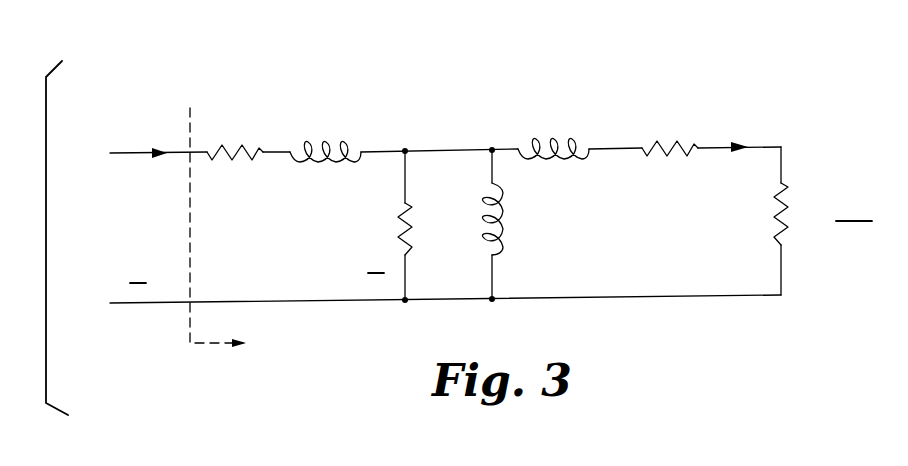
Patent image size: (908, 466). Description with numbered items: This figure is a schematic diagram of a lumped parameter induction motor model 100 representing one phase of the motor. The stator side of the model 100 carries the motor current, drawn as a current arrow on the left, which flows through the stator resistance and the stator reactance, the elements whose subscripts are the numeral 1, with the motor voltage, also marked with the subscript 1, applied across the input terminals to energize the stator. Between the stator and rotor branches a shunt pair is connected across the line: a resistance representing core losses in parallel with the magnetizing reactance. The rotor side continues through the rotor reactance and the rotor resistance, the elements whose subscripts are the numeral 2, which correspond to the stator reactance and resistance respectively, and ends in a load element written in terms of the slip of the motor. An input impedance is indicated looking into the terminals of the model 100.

The lumped parameter induction motor model 100 is at (737, 46).
The stator side components (R1, X1, I1, V1) 1 is at (254, 134).
The rotor side components (R2, X2, I2) 2 is at (658, 130).